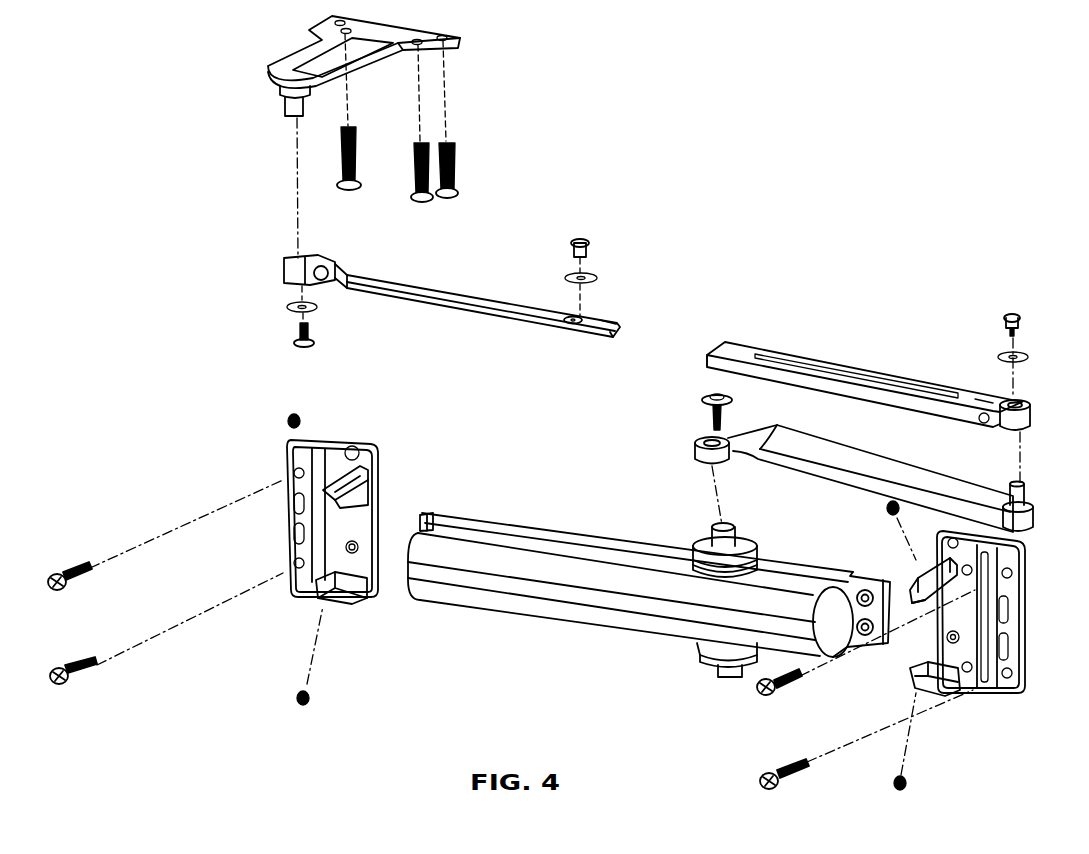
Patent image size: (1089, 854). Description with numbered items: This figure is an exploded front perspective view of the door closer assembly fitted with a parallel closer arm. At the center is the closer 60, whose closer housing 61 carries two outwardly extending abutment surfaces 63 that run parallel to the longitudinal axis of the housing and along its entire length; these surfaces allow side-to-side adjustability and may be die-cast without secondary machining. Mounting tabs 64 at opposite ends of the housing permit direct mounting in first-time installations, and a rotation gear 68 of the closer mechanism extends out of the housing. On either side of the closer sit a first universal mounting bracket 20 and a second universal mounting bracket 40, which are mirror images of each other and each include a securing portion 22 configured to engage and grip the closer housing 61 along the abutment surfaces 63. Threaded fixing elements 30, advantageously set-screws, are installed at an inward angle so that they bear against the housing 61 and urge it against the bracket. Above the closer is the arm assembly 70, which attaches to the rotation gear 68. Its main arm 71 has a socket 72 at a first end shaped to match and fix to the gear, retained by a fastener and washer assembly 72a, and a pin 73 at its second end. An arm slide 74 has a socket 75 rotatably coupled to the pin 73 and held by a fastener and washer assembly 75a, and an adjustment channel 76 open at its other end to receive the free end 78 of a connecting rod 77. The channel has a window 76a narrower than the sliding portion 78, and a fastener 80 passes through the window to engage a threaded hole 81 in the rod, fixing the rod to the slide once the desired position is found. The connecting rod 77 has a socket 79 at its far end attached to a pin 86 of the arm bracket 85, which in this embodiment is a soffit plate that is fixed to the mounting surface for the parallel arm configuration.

The first universal mounting bracket 20 is at (333, 438).
The securing portion 22 is at (357, 600).
The fixing element 30 is at (286, 422).
The second universal mounting bracket 40 is at (1021, 695).
The closer 60 is at (649, 592).
The closer housing 61 is at (583, 530).
The abutment surface 63 is at (508, 538).
The mounting tab 64 is at (431, 513).
The rotation gear 68 is at (706, 528).
The arm assembly 70 is at (861, 354).
The main arm 71 is at (893, 471).
The socket 72 is at (700, 437).
The fastener and washer assembly 72a is at (710, 395).
The pin 73 is at (1008, 486).
The arm slide 74 is at (860, 373).
The socket 75 is at (1029, 409).
The fastener and washer assembly 75a is at (1020, 320).
The adjustment channel 76 is at (710, 352).
The window 76a is at (911, 381).
The connecting rod 77 is at (457, 291).
The free end 78 is at (604, 323).
The socket 79 is at (285, 268).
The fastener 80 is at (582, 238).
The threaded hole 81 is at (566, 323).
The arm bracket 85 is at (457, 49).
The pin 86 is at (286, 104).